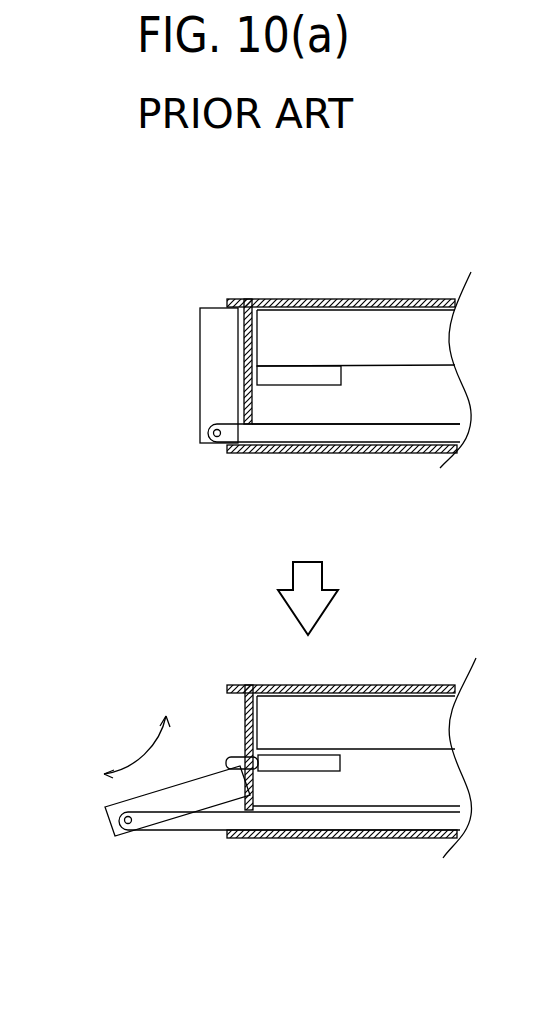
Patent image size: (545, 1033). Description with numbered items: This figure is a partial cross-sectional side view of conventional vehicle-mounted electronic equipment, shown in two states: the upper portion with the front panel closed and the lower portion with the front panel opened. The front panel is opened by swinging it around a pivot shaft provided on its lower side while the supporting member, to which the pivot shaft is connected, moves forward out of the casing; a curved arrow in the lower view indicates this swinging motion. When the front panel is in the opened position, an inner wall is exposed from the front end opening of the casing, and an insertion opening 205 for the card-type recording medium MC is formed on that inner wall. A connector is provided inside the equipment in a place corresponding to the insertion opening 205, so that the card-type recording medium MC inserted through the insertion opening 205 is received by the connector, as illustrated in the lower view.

The insertion opening 205 is at (250, 386).
The card-type recording medium MC is at (229, 757).